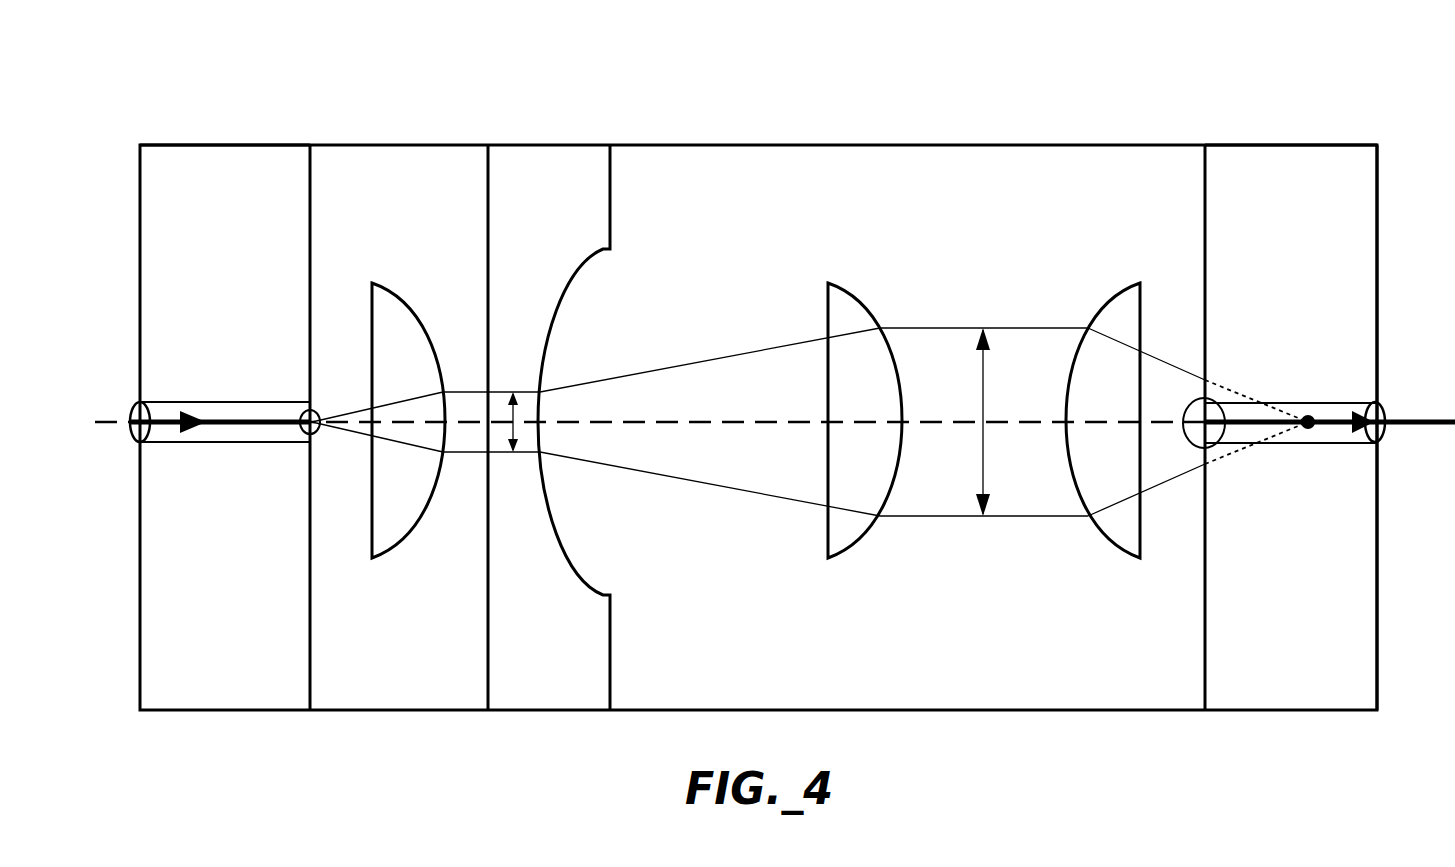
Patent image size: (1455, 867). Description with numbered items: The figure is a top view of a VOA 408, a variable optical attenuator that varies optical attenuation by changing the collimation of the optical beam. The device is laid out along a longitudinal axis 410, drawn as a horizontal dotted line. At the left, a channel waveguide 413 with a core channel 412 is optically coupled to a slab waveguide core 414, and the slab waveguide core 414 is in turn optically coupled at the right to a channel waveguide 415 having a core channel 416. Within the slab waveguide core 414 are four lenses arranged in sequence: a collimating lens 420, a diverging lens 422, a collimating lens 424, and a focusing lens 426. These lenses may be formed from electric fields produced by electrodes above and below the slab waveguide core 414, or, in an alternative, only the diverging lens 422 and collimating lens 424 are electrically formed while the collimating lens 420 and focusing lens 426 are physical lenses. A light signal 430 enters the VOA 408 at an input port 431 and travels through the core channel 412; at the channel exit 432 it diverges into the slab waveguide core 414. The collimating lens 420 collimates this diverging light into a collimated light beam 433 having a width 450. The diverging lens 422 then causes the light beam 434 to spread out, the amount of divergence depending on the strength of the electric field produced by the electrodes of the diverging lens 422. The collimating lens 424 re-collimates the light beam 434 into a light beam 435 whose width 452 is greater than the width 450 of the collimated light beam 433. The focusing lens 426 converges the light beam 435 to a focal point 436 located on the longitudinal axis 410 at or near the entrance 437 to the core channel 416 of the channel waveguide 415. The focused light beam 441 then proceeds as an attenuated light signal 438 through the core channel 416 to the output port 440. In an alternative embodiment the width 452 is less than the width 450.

The VOA 408 is at (1256, 90).
The longitudinal axis 410 is at (122, 428).
The core channel 412 is at (225, 410).
The channel waveguide 413 is at (218, 170).
The slab waveguide core 414 is at (915, 170).
The channel waveguide 415 is at (1307, 168).
The core channel 416 is at (1338, 388).
The collimating lens 420 is at (385, 310).
The diverging lens 422 is at (598, 213).
The collimating lens 424 is at (846, 310).
The focusing lens 426 is at (1108, 312).
The light signal 430 is at (257, 425).
The input port 431 is at (128, 405).
The channel exit 432 is at (317, 427).
The collimated light beam 433 is at (470, 428).
The light beam 434 is at (737, 472).
The light beam 435 is at (1050, 498).
The focal point 436 is at (1308, 430).
The entrance 437 is at (1215, 405).
The attenuated light signal 438 is at (1280, 427).
The output port 440 is at (1382, 410).
The focused light beam 441 is at (1160, 392).
The width 450 is at (518, 418).
The width 452 is at (987, 398).